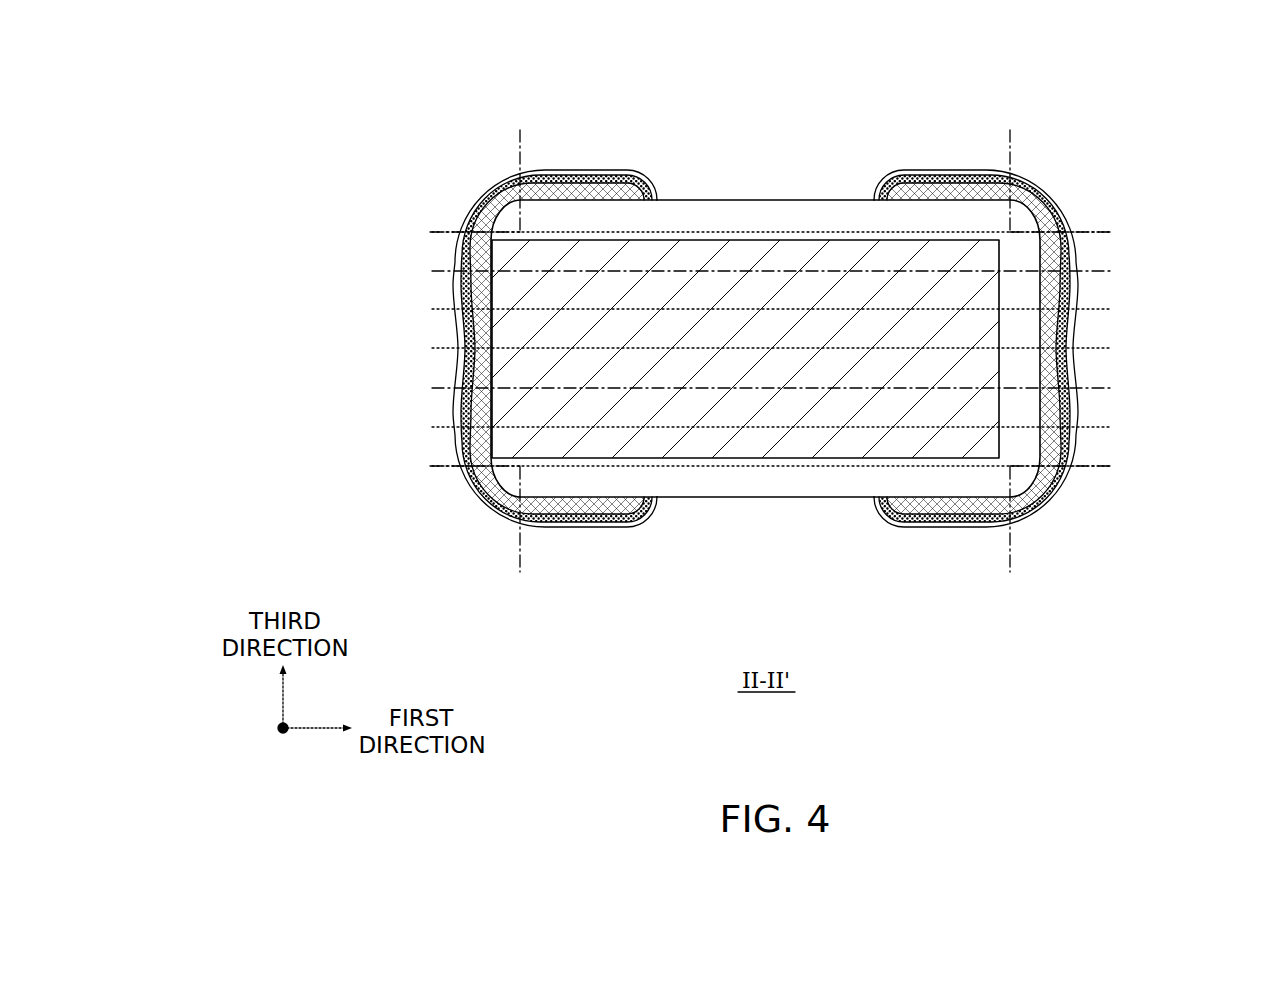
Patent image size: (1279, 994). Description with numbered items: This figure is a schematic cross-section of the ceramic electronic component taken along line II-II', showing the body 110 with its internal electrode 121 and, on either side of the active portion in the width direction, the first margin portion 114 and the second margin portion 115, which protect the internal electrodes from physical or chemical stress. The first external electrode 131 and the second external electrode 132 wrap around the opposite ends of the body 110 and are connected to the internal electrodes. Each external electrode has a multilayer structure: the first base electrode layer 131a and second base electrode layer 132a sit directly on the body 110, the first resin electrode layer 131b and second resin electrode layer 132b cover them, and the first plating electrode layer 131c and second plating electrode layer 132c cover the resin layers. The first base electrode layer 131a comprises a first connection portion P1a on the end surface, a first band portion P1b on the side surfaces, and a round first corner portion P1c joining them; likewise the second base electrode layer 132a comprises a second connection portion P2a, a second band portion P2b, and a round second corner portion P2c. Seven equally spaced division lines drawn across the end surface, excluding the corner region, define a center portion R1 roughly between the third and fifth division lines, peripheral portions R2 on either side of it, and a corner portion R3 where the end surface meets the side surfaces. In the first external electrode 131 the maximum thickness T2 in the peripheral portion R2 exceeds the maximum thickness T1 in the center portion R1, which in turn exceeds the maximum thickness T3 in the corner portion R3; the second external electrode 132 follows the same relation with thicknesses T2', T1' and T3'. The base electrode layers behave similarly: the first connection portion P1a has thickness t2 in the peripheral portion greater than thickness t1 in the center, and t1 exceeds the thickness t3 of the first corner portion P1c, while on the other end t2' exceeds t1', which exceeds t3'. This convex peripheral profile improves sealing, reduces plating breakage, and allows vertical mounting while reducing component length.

The body 110 is at (800, 502).
The first margin portion 114 is at (728, 220).
The second margin portion 115 is at (728, 480).
The first internal electrode 121 is at (768, 256).
The first external electrode 131 is at (695, 78).
The first base electrode layer 131a is at (604, 182).
The first resin electrode layer 131b is at (585, 178).
The first plating electrode layer 131c is at (552, 172).
The second external electrode 132 is at (840, 78).
The second base electrode layer 132a is at (905, 180).
The second resin electrode layer 132b is at (936, 180).
The second plating electrode layer 132c is at (970, 172).
The first connection portion P1a is at (467, 443).
The first band portion P1b is at (618, 189).
The first corner portion P1c is at (514, 183).
The second connection portion P2a is at (1065, 440).
The second band portion P2b is at (912, 188).
The second corner portion P2c is at (1058, 214).
The center portion R1 is at (332, 310).
The peripheral portion R2 is at (332, 232).
The corner portion R3 is at (476, 135).
The maximum thickness of first external electrode in center portion T1 is at (443, 360).
The maximum thickness of first connection portion in center portion t1 is at (446, 384).
The maximum thickness of first external electrode in peripheral portion T2 is at (443, 281).
The maximum thickness of first connection portion in peripheral portion t2 is at (446, 303).
The maximum thickness of first external electrode in corner portion T3 is at (490, 184).
The maximum thickness of first corner portion t3 is at (468, 212).
The maximum thickness of second external electrode in center portion T1' is at (1090, 362).
The maximum thickness of second connection portion in center portion t1' is at (1088, 385).
The maximum thickness of second external electrode in peripheral portion T2' is at (1090, 277).
The maximum thickness of second connection portion in peripheral portion t2' is at (1088, 301).
The maximum thickness of second external electrode in corner portion T3' is at (1038, 186).
The maximum thickness of second corner portion t3' is at (1059, 206).